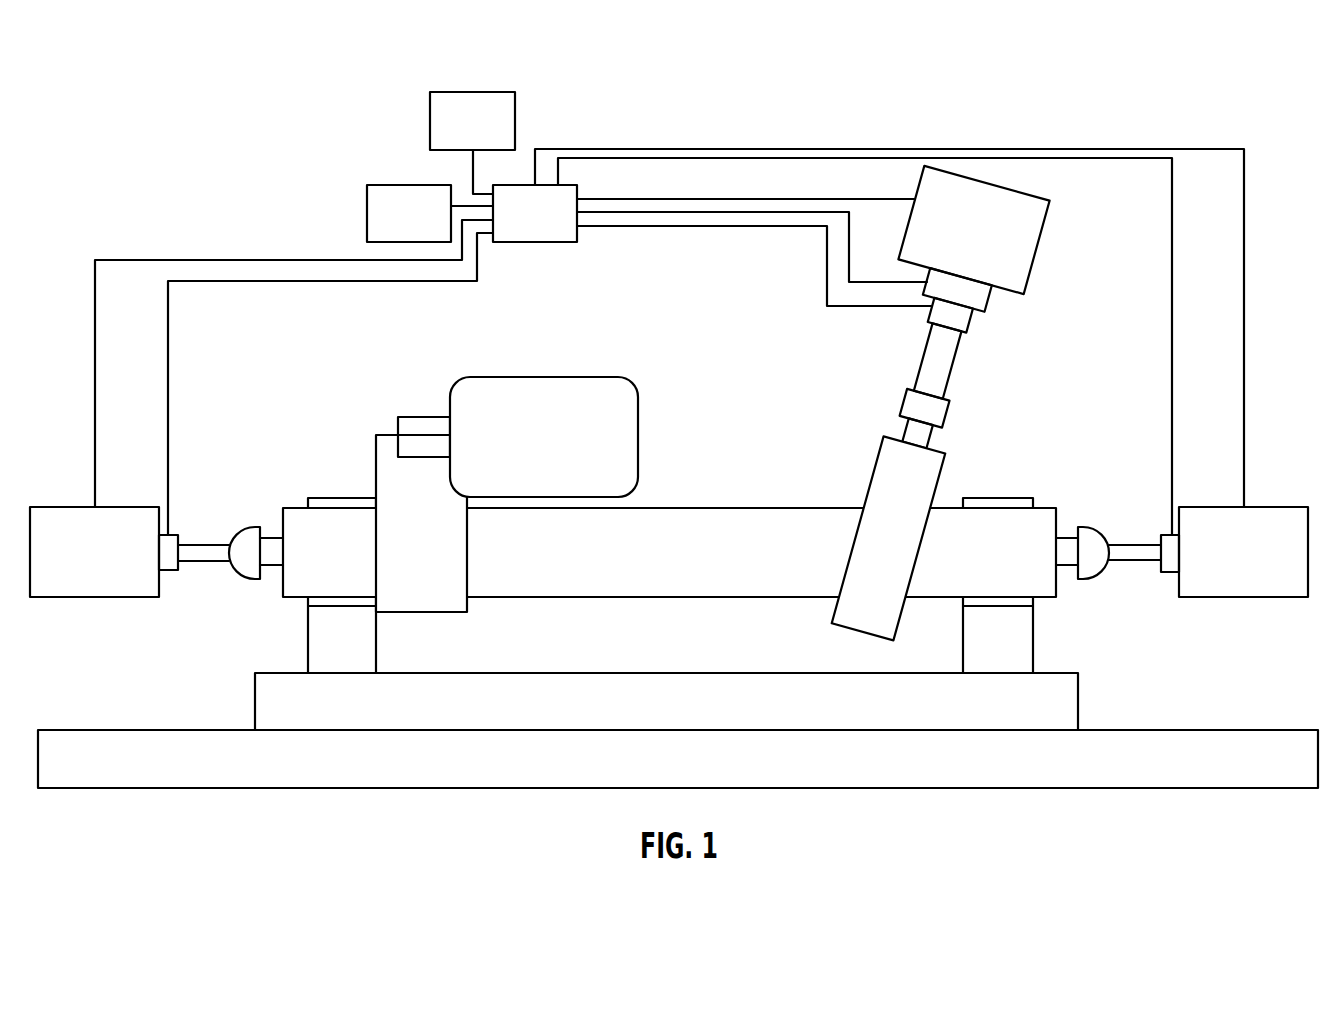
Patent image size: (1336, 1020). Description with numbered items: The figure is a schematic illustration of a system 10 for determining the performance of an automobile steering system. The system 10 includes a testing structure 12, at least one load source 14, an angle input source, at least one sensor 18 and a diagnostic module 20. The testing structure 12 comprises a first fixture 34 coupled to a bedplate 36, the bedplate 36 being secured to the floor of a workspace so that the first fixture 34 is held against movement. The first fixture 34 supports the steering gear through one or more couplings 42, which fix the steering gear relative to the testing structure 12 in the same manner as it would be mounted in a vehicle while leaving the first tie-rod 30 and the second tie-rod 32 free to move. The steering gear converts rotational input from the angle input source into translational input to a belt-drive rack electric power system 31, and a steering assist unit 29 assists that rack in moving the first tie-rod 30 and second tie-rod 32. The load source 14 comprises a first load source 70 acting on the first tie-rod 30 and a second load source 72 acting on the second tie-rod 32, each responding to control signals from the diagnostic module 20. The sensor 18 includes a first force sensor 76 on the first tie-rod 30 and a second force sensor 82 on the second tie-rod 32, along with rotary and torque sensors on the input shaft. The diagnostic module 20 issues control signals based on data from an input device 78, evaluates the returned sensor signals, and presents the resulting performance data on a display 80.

The system 10 is at (788, 122).
The testing structure 12 is at (1240, 700).
The load source 14 is at (70, 456).
The sensor 18 is at (971, 407).
The diagnostic module 20 is at (557, 243).
The steering assist unit 29 is at (548, 377).
The first tie-rod 30 is at (250, 520).
The belt-drive rack electric power system 31 is at (717, 506).
The second tie-rod 32 is at (1092, 522).
The first fixture 34 is at (1090, 700).
The bedplate 36 is at (1187, 789).
The couplings 42 is at (303, 612).
The first load source 70 is at (92, 599).
The second load source 72 is at (1243, 599).
The first force sensor 76 is at (167, 573).
The input device 78 is at (458, 92).
The display 80 is at (395, 185).
The second force sensor 82 is at (1172, 574).